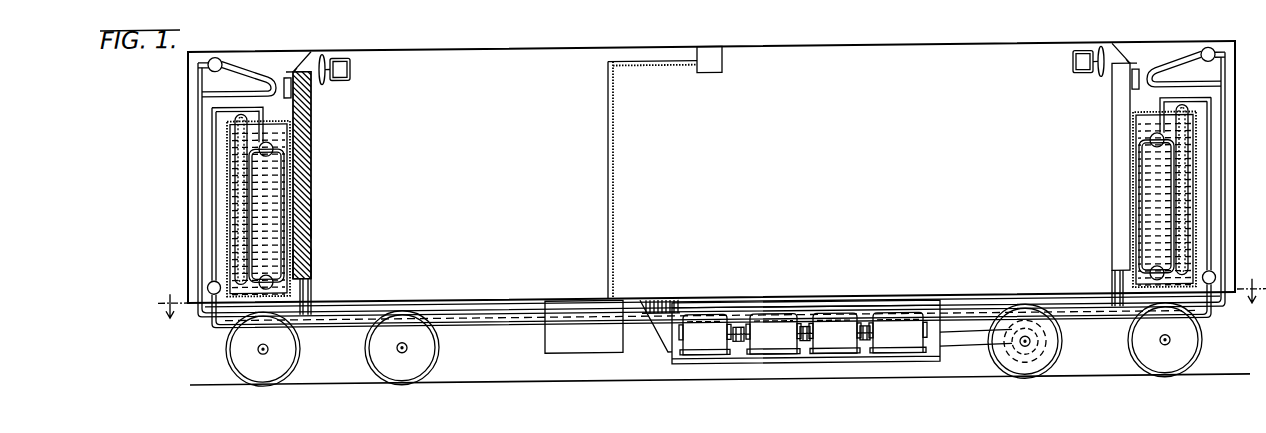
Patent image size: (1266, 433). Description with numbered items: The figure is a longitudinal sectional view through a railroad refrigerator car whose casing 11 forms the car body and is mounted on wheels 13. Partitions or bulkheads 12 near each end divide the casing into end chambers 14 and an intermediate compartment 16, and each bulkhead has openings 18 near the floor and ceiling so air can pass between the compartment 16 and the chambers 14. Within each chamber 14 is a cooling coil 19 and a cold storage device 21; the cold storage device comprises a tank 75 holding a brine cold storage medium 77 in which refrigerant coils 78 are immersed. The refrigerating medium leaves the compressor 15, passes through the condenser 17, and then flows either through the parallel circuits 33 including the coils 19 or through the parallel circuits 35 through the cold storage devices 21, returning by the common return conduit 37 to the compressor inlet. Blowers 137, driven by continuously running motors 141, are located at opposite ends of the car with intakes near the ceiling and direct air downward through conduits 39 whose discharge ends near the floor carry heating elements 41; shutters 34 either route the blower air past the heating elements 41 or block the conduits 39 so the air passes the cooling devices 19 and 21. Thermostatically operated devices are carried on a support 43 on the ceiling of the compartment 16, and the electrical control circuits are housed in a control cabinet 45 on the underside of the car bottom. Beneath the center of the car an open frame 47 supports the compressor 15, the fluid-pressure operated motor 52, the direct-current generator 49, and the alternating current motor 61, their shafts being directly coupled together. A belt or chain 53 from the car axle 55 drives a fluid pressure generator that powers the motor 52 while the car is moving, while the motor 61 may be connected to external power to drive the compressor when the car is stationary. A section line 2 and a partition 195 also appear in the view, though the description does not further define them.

The section line 2 is at (706, 299).
The casing 11 is at (188, 84).
The bulkhead 12 is at (311, 194).
The wheels 13 is at (425, 361).
The chamber 14 is at (1170, 62).
The compressor 15 is at (705, 334).
The intermediate compartment 16 is at (708, 203).
The condenser 17 is at (236, 58).
The openings 18 is at (298, 57).
The cooling coils 19 is at (247, 67).
The cold storage devices 21 is at (256, 225).
The parallel circuits 33 is at (212, 189).
The shutters 34 is at (1117, 55).
The parallel circuits 35 is at (235, 144).
The common return conduit 37 is at (199, 268).
The conduits 39 is at (312, 122).
The heating elements 41 is at (311, 259).
The support 43 is at (722, 68).
The control cabinet 45 is at (547, 353).
The frame 47 is at (667, 357).
The direct-current generator 49 is at (835, 333).
The fluid-pressure operated motor 52 is at (773, 334).
The belt or chain 53 is at (968, 356).
The car axle 55 is at (1030, 352).
The alternating current motor 61 is at (898, 332).
The tank 75 is at (309, 224).
The cold storage medium 77 is at (291, 146).
The refrigerant coils 78 is at (280, 175).
The blowers 137 is at (319, 56).
The blower motors 141 is at (1075, 58).
The partition 195 is at (613, 215).